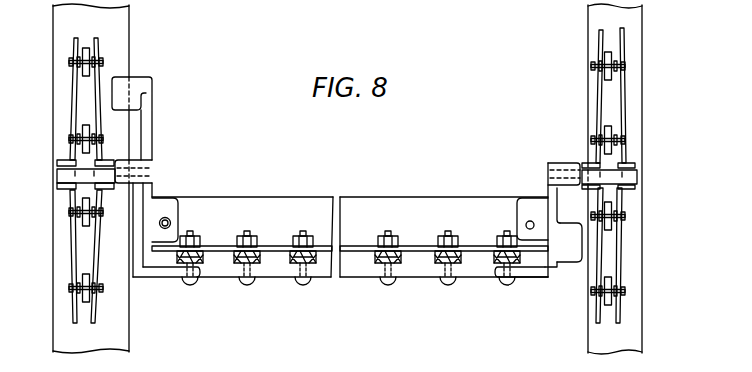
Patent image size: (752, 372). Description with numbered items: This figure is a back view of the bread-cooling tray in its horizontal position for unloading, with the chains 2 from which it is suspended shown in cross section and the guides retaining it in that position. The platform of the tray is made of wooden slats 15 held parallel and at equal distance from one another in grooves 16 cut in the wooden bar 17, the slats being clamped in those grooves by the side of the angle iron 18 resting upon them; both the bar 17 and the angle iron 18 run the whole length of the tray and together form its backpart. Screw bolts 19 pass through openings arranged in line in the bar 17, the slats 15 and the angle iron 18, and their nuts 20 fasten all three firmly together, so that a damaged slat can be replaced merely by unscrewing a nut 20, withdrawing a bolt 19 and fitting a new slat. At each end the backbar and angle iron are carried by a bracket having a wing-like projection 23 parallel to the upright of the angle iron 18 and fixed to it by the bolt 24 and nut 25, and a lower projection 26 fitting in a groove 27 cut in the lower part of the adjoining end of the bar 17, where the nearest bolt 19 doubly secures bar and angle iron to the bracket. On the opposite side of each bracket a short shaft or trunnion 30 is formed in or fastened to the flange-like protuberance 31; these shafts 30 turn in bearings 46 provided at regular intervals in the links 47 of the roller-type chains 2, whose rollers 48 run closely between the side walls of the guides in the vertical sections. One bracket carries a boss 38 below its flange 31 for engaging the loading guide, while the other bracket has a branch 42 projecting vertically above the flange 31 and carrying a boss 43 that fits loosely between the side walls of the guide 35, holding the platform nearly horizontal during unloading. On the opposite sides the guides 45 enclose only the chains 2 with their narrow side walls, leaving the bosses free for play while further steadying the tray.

The endless parallel chains 2 is at (80, 47).
The wooden slats 15 is at (255, 263).
The grooves 16 is at (237, 267).
The wooden bar 17 is at (347, 272).
The angle iron 18 is at (228, 207).
The screw bolts 19 is at (190, 284).
The nuts 20 is at (250, 232).
The wing-like projection 23 is at (160, 208).
The bolt 24 is at (528, 222).
The nut 25 is at (168, 218).
The projection 26 is at (167, 270).
The groove 27 is at (530, 270).
The shaft 30 is at (60, 174).
The flange-like protuberance 31 is at (132, 165).
The guide 35 is at (65, 30).
The boss 38 is at (570, 258).
The branch 42 is at (148, 127).
The boss 43 is at (135, 85).
The guides 45 is at (635, 48).
The bearings 46 is at (72, 187).
The links 47 is at (72, 98).
The rollers 48 is at (82, 278).